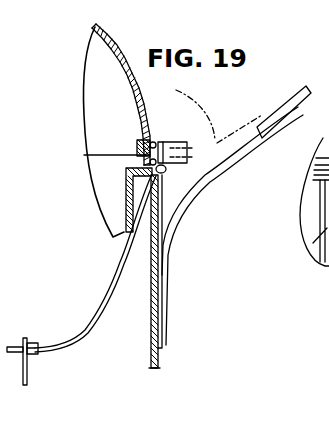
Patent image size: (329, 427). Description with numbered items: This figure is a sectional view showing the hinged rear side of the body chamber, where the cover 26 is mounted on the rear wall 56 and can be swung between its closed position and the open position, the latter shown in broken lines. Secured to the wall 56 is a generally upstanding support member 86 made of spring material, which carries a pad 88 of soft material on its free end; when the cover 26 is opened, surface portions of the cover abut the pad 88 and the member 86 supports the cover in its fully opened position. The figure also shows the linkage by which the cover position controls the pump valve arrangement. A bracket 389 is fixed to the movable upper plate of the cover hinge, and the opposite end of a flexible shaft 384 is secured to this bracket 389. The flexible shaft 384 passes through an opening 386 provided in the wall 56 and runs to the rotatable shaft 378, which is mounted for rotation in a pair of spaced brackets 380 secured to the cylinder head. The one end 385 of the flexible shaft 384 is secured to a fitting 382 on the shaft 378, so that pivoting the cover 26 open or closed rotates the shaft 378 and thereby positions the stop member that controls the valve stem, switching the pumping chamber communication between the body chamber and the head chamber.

The cover 26 is at (137, 102).
The bracket 389 is at (148, 143).
The opening 386 is at (160, 171).
The pad 88 is at (290, 111).
The support member 86 is at (207, 203).
The flexible shaft 384 is at (104, 301).
The rotatable shaft 378 is at (15, 347).
The one end of flexible shaft 385 is at (38, 346).
The fitting 382 is at (32, 354).
The brackets 380 is at (27, 382).
The wall 56 is at (151, 358).